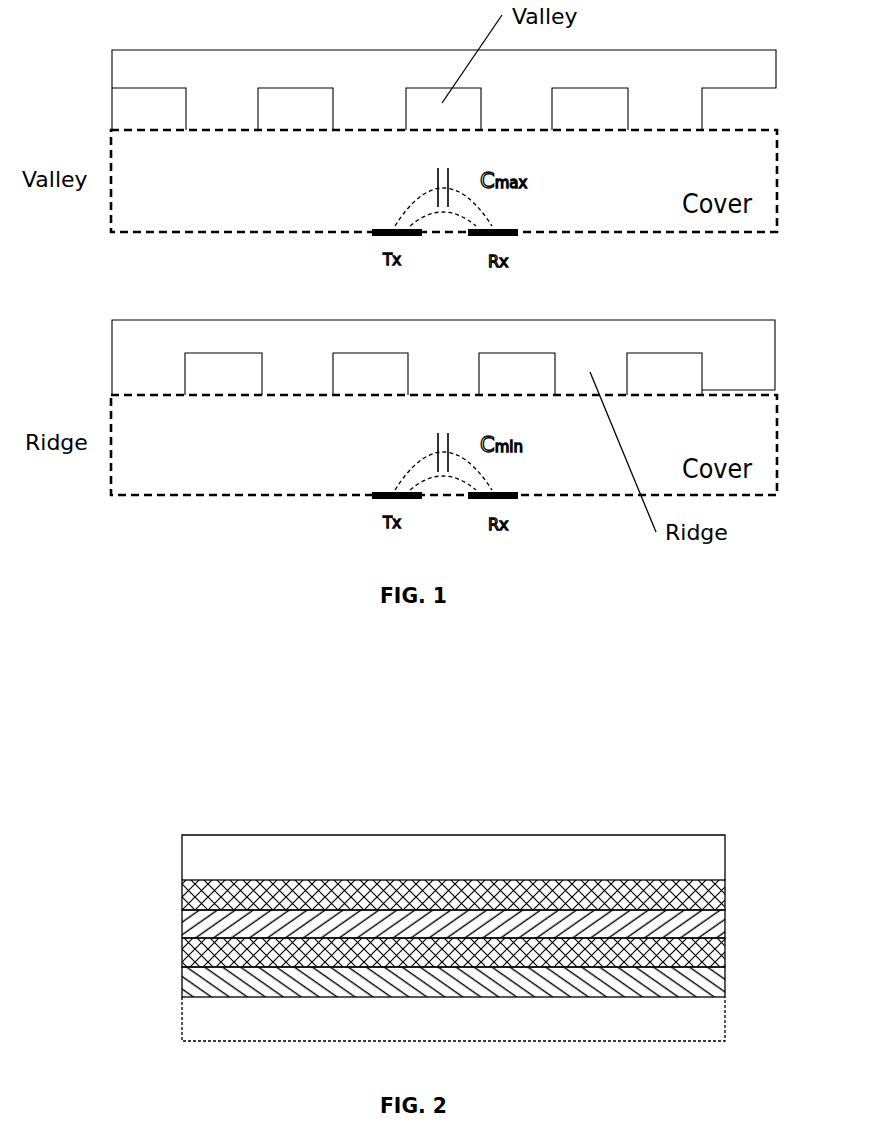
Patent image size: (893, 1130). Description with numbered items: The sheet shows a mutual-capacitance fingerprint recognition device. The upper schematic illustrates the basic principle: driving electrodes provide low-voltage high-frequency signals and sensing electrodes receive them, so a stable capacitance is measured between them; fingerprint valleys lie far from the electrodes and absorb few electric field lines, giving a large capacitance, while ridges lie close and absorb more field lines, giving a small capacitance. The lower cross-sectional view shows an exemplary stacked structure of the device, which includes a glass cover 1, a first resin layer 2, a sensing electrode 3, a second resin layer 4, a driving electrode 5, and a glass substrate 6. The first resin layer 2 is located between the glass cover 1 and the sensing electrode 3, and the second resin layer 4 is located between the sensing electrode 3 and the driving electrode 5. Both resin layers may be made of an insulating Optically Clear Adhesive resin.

The glass cover 1 is at (680, 853).
The first resin layer 2 is at (182, 893).
The sensing electrode 3 is at (705, 925).
The second resin layer 4 is at (182, 952).
The driving electrode 5 is at (705, 982).
The glass substrate 6 is at (682, 1023).